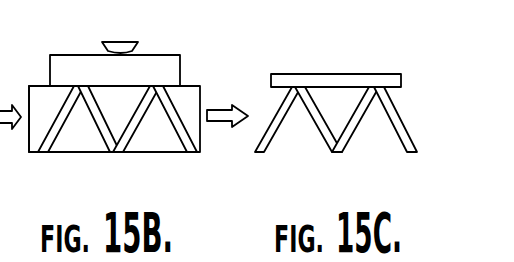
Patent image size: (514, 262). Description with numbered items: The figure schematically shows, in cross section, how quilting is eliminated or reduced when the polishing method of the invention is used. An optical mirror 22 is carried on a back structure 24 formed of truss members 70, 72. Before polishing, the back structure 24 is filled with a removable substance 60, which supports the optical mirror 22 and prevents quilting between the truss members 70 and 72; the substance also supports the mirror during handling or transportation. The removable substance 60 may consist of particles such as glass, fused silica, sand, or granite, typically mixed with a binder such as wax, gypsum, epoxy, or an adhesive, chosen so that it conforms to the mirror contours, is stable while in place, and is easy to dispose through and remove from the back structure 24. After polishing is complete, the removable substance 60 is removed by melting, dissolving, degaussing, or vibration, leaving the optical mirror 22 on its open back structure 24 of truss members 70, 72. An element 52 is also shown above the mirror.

In FIG. 15B, the optical mirror 22 is at (163, 62).
In FIG. 15C, the optical mirror 22 is at (401, 79).
In FIG. 15B, the back structure 24 is at (28, 127).
In FIG. 15C, the back structure 24 is at (405, 107).
In FIG. 15B, the lens element 52 is at (123, 40).
In FIG. 15B, the removable substance 60 is at (152, 138).
In FIG. 15B, the truss member 70 is at (93, 101).
In FIG. 15B, the truss member 72 is at (147, 112).